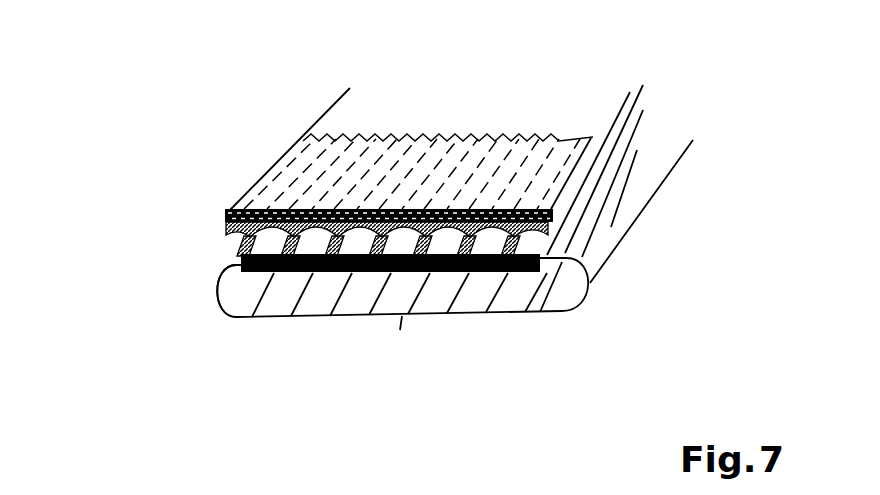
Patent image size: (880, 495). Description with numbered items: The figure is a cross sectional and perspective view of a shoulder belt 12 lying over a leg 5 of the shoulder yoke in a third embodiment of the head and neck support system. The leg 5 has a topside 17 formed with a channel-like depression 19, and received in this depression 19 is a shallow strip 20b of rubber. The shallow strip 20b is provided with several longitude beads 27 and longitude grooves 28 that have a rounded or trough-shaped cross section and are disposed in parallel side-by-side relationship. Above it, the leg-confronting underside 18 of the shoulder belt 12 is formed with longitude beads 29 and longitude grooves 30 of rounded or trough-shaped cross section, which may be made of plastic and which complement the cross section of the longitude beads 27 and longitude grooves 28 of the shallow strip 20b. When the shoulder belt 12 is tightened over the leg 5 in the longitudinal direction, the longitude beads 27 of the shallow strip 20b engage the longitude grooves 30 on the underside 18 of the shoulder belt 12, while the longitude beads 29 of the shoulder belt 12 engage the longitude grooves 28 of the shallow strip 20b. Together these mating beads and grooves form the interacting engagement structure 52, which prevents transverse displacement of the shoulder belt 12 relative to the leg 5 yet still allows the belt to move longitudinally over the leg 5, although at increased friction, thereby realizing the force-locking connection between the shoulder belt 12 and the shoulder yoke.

The shoulder belt 12 is at (300, 140).
The longitude grooves 28 is at (392, 237).
The longitude beads 27 is at (485, 237).
The underside 18 is at (248, 243).
The interacting engagement structure 52 is at (250, 247).
The longitude beads 29 is at (437, 272).
The longitude grooves 30 is at (301, 276).
The shallow strip 20b is at (351, 292).
The channel-like depression 19 is at (492, 275).
The leg 5 is at (230, 330).
The topside 17 is at (562, 243).